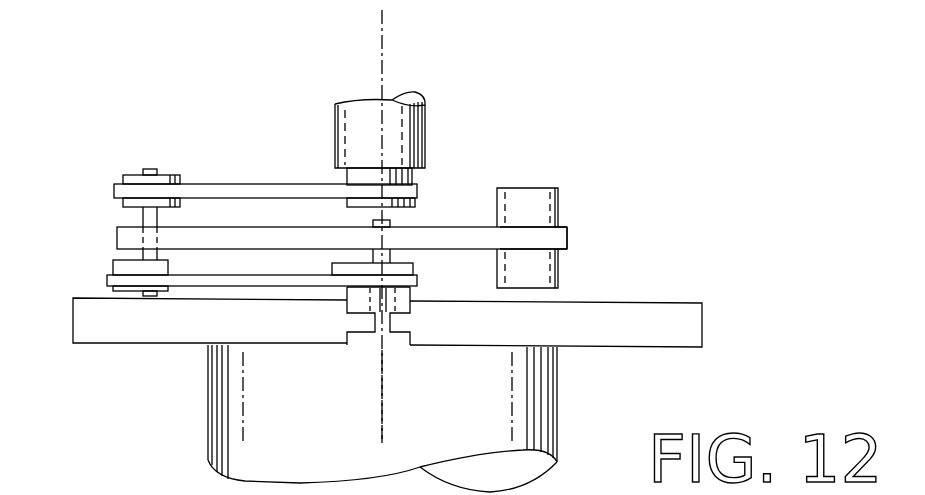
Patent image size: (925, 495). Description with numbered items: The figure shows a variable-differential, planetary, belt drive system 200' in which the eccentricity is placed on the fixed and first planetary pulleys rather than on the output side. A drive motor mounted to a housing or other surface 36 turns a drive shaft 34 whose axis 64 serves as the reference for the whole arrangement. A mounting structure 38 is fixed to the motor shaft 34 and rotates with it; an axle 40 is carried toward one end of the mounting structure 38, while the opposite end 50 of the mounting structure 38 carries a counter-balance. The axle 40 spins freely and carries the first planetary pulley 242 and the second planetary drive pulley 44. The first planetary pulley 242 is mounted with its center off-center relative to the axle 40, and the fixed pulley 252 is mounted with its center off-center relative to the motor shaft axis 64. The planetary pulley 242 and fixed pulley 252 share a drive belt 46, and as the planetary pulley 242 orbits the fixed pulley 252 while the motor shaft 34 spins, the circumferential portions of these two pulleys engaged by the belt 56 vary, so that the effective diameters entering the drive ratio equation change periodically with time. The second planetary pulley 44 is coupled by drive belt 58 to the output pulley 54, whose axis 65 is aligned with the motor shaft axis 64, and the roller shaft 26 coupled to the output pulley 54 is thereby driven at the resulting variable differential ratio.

The roller shaft 26 is at (428, 130).
The drive shaft 34 is at (378, 316).
The housing 36 is at (650, 303).
The mounting structure 38 is at (468, 228).
The axle 40 is at (152, 169).
The second planetary drive pulley 44 is at (125, 178).
The drive belt 46 is at (117, 236).
The opposite end 50 is at (568, 238).
The output pulley 54 is at (414, 205).
The drive belt 56 is at (243, 286).
The drive belt 58 is at (257, 184).
The axis 64 is at (385, 422).
The axis 65 is at (383, 70).
The variable-differential belt drive system 200' is at (713, 96).
The first planetary pulley 242 is at (110, 263).
The fixed pulley 252 is at (410, 312).